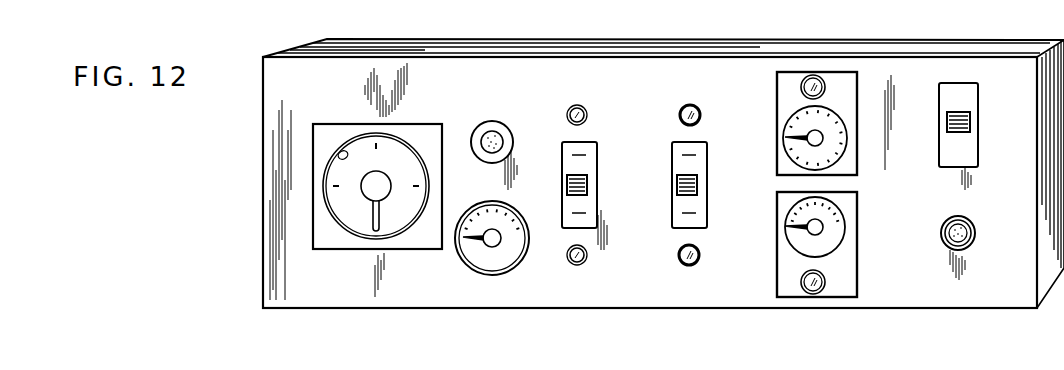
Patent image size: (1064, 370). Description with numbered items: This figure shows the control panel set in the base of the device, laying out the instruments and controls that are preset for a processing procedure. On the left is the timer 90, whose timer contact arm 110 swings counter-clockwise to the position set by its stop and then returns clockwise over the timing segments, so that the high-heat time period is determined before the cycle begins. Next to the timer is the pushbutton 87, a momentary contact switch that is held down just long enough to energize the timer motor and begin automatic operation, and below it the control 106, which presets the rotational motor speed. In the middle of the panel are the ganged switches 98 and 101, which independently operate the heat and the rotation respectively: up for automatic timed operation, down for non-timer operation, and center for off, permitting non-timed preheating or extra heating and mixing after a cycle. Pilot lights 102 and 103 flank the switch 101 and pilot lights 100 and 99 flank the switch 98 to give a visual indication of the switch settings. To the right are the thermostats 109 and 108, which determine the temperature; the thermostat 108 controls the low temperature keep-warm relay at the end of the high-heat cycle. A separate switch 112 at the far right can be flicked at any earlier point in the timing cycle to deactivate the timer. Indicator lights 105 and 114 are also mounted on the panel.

The pushbutton 87 is at (492, 121).
The timer 90 is at (347, 150).
The ganged switch 98 is at (699, 191).
The pilot light 99 is at (698, 263).
The pilot light 100 is at (690, 104).
The ganged switch 101 is at (588, 176).
The pilot light 102 is at (585, 107).
The pilot light 103 is at (585, 262).
The indicator light 105 is at (825, 282).
The control 106 is at (470, 262).
The thermostat 108 is at (843, 224).
The thermostat 109 is at (793, 130).
The timer contact arm 110 is at (801, 89).
The switch 112 is at (970, 122).
The indicator light 114 is at (972, 237).